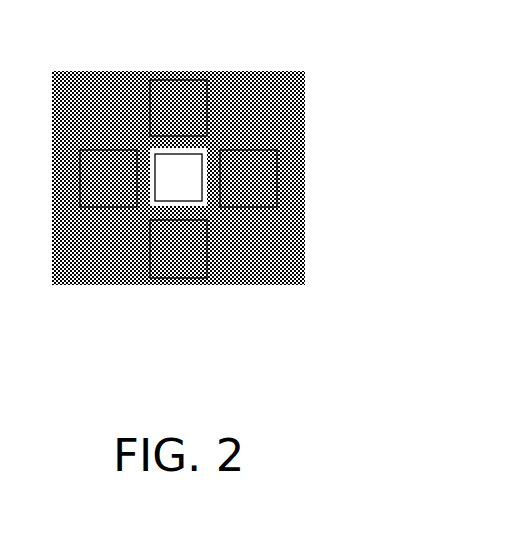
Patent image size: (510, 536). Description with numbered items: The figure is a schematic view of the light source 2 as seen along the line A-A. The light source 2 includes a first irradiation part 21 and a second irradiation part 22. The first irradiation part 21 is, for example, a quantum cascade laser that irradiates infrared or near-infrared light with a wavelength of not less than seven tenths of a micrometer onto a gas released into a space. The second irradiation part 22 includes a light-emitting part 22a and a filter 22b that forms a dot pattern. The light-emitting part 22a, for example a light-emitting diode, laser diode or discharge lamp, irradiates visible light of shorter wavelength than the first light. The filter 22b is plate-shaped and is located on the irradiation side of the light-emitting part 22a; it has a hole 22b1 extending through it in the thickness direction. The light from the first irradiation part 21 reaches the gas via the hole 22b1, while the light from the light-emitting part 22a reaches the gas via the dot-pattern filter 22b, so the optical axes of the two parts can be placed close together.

The light source 2 is at (326, 58).
The first irradiation part 21 is at (178, 186).
The second irradiation part 22 is at (243, 366).
The light-emitting part 22a is at (92, 285).
The filter 22b is at (240, 285).
The hole 22b1 is at (168, 158).